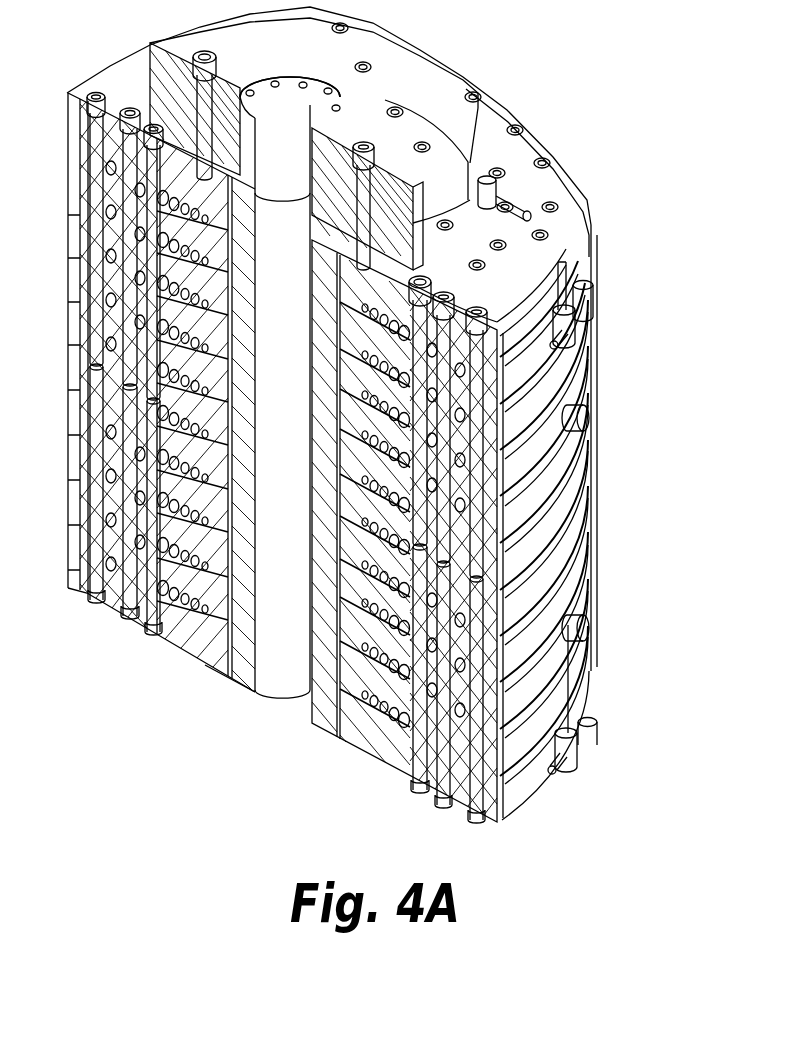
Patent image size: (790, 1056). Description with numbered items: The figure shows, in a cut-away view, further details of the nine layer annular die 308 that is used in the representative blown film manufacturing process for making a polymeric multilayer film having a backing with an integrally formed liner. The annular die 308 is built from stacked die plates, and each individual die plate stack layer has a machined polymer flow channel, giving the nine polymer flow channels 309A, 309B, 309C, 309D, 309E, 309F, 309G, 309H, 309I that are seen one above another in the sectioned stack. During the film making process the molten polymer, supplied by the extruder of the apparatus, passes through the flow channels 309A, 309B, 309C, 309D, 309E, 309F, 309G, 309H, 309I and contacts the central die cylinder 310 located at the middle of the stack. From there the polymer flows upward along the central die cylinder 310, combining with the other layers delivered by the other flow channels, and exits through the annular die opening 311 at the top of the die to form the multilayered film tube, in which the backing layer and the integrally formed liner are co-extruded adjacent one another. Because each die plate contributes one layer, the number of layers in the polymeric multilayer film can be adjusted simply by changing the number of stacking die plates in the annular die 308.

The annular die 308 is at (595, 139).
The polymer flow channel 309A is at (412, 332).
The polymer flow channel 309B is at (426, 379).
The polymer flow channel 309C is at (412, 419).
The polymer flow channel 309D is at (409, 457).
The polymer flow channel 309E is at (409, 504).
The polymer flow channel 309F is at (409, 589).
The polymer flow channel 309G is at (409, 627).
The polymer flow channel 309H is at (409, 671).
The polymer flow channel 309I is at (406, 724).
The central die cylinder 310 is at (233, 675).
The annular die opening 311 is at (340, 104).